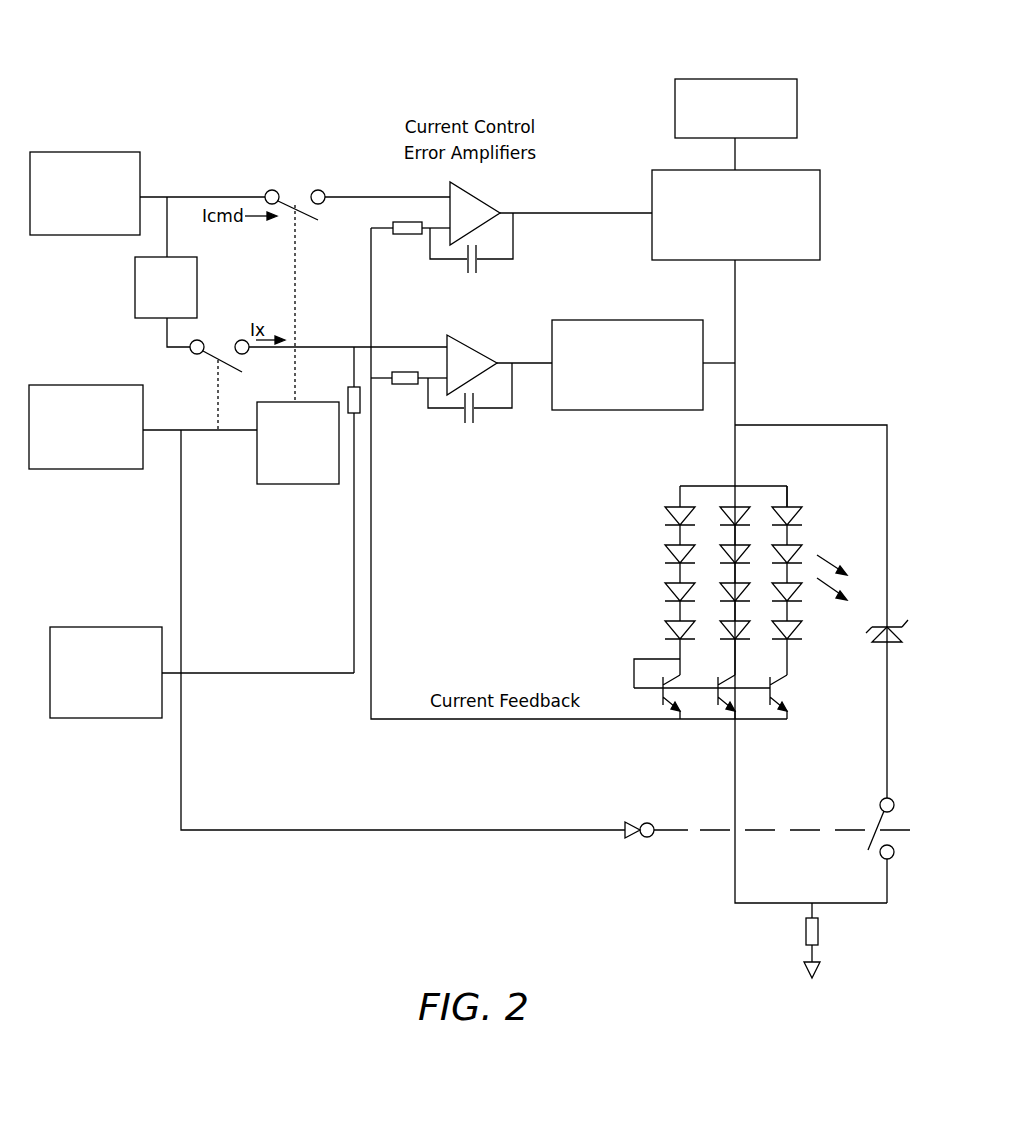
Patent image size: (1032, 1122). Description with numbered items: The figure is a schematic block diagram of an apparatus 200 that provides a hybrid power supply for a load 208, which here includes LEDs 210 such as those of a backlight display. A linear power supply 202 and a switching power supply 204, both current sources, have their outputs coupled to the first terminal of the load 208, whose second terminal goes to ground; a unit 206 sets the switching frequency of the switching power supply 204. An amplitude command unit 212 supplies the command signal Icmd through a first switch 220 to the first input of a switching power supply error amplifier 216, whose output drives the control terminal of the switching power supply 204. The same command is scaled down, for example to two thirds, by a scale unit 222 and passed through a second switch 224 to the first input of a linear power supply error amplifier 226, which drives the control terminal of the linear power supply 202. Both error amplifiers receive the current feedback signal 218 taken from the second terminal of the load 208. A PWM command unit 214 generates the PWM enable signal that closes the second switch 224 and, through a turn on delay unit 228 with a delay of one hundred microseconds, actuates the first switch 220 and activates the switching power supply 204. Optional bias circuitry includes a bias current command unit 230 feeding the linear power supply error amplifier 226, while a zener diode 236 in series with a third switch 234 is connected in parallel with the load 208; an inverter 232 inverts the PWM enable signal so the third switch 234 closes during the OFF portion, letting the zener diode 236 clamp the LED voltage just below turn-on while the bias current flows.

The apparatus 200 is at (498, 57).
The linear power supply 202 is at (613, 319).
The switching power supply 204 is at (763, 261).
The switching frequency unit 206 is at (797, 109).
The load 208 is at (645, 563).
The LED 210 is at (790, 505).
The amplitude command unit 212 is at (140, 167).
The PWM command unit 214 is at (85, 470).
The switching power supply error amplifier 216 is at (483, 196).
The current feedback signal 218 is at (372, 565).
The first switch 220 is at (297, 189).
The scale unit 222 is at (197, 283).
The second switch 224 is at (198, 363).
The linear power supply error amplifier 226 is at (478, 345).
The turn on delay unit 228 is at (293, 485).
The bias current command unit 230 is at (110, 627).
The inverter 232 is at (639, 821).
The third switch 234 is at (877, 828).
The zener diode 236 is at (870, 632).